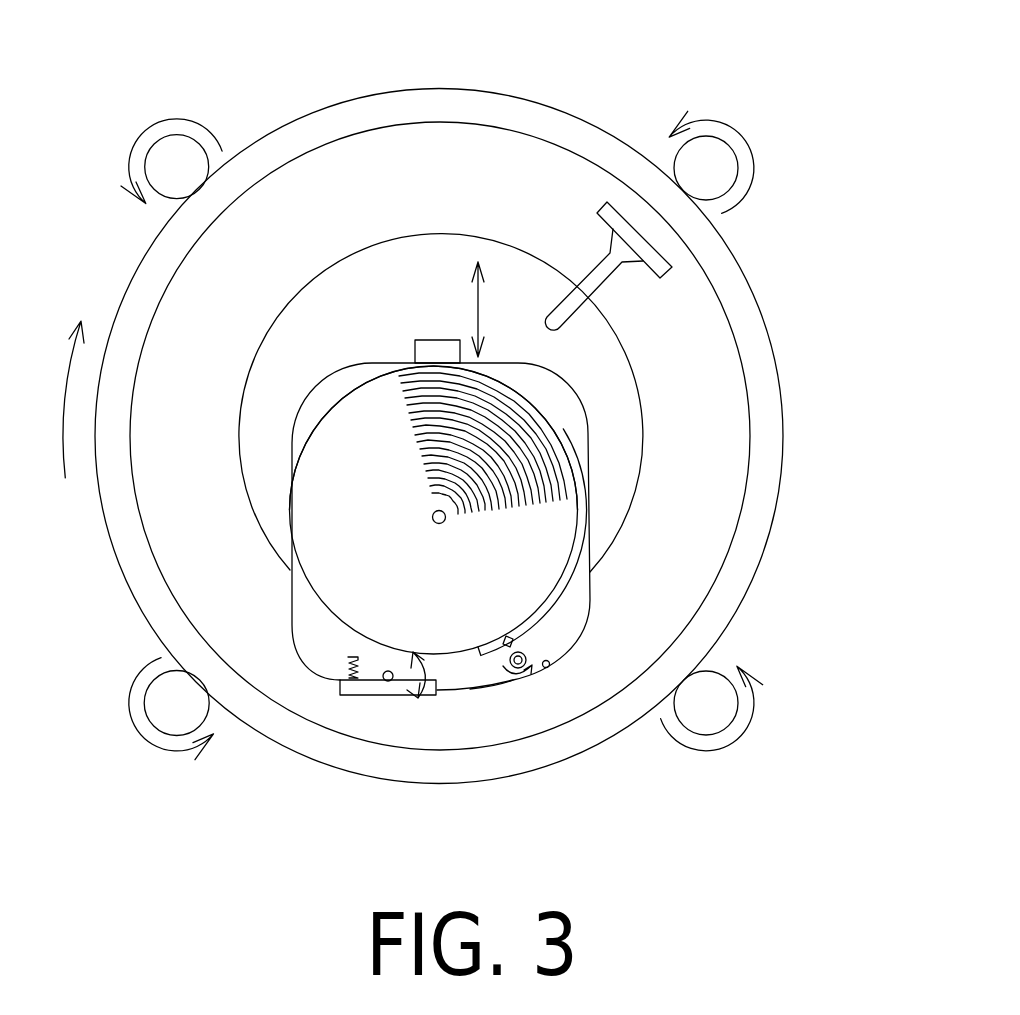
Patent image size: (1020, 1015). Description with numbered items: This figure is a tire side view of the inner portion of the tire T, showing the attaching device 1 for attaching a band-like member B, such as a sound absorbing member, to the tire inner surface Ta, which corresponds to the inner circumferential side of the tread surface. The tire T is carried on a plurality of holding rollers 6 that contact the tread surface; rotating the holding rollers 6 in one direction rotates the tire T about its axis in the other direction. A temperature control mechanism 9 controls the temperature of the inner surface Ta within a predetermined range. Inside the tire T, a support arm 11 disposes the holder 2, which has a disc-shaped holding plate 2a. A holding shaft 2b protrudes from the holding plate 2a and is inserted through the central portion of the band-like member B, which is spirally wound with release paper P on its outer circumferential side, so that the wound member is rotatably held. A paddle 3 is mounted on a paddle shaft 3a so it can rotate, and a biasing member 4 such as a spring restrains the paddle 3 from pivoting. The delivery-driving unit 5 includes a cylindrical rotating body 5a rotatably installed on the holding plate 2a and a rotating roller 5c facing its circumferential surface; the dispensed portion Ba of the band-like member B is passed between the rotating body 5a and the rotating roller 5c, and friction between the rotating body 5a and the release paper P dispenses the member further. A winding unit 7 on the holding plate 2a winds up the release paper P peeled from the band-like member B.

The attaching device 1 is at (623, 89).
The tire T is at (787, 337).
The tire inner surface Ta is at (694, 612).
The holding rollers 6 is at (175, 152).
The temperature control mechanism 9 is at (663, 272).
The band-like member B is at (320, 563).
The dispensed portion Ba is at (487, 663).
The holder 2 is at (319, 356).
The holding plate 2a is at (365, 375).
The holding shaft 2b is at (432, 512).
The support arm 11 is at (443, 348).
The release paper P is at (568, 608).
The rotating roller 5c is at (507, 638).
The delivery-driving unit 5 is at (522, 672).
The rotating body 5a is at (527, 653).
The winding unit 7 is at (550, 667).
The paddle 3 is at (377, 693).
The paddle shaft 3a is at (389, 671).
The biasing member 4 is at (343, 660).